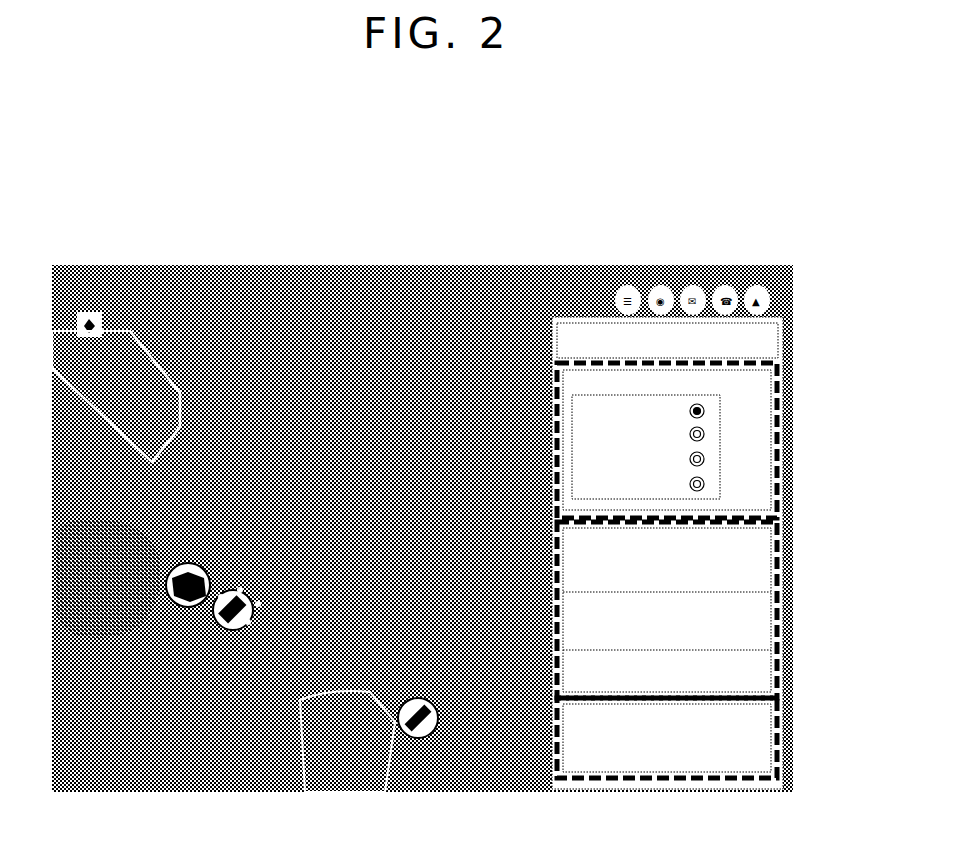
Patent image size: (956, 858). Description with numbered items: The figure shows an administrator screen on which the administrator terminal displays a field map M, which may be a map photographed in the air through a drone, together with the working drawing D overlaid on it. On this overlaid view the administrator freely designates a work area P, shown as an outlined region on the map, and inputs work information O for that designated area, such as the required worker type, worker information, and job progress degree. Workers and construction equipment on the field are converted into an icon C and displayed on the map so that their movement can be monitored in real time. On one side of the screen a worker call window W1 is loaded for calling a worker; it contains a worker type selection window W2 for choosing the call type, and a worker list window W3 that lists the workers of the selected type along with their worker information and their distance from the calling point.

The field map M is at (52, 487).
The work area P is at (52, 410).
The working drawing D is at (52, 705).
The icon C is at (398, 793).
The worker call window W1 is at (780, 343).
The worker type selection window W2 is at (755, 435).
The worker list window W3 is at (752, 627).
The work information O is at (750, 750).